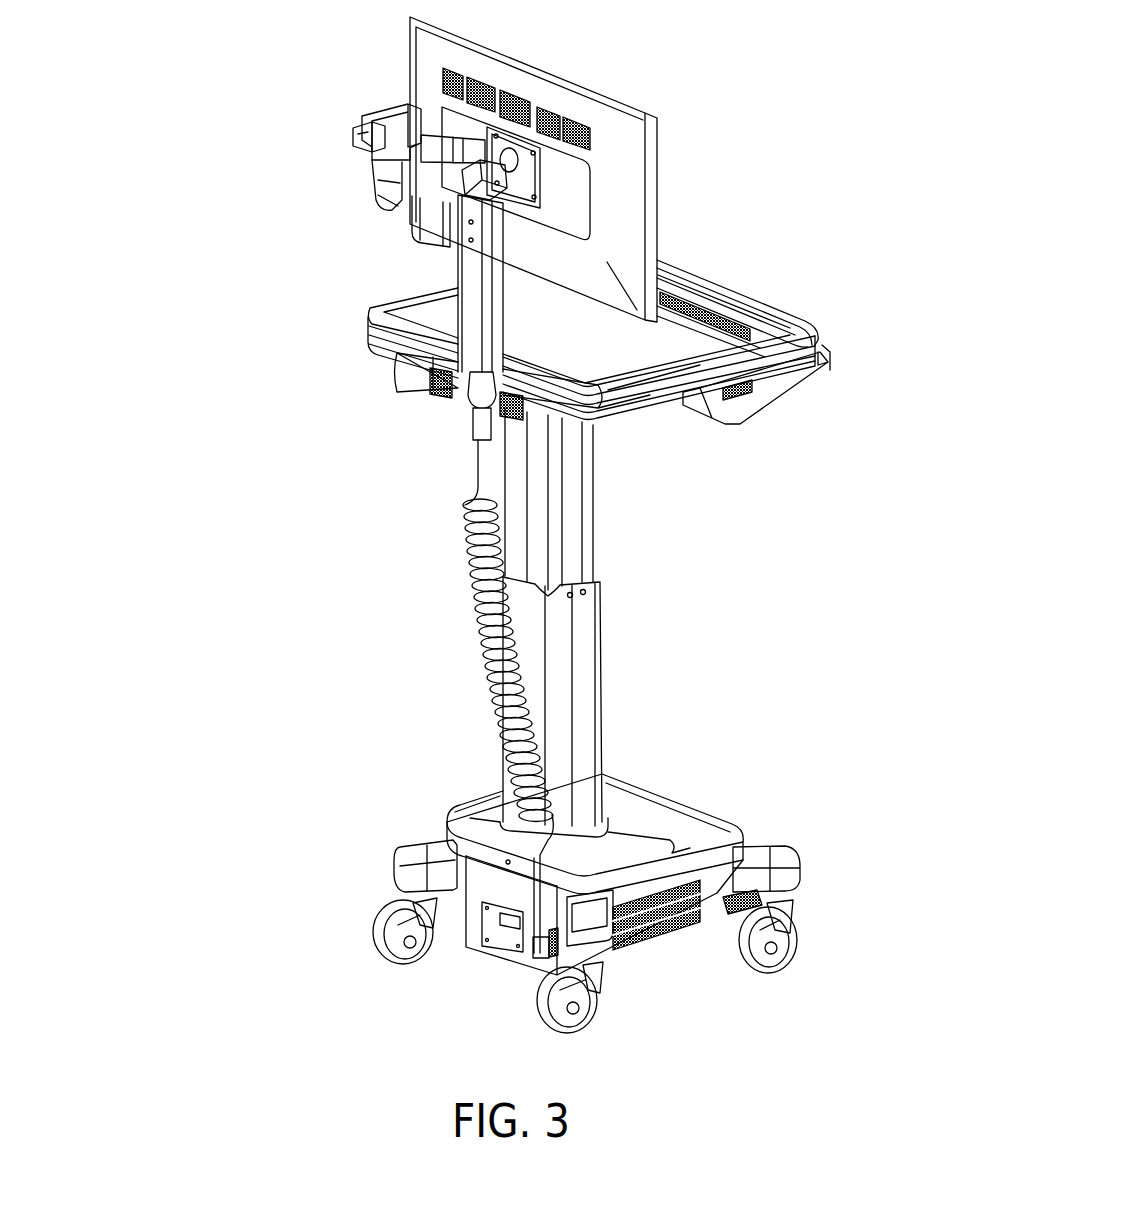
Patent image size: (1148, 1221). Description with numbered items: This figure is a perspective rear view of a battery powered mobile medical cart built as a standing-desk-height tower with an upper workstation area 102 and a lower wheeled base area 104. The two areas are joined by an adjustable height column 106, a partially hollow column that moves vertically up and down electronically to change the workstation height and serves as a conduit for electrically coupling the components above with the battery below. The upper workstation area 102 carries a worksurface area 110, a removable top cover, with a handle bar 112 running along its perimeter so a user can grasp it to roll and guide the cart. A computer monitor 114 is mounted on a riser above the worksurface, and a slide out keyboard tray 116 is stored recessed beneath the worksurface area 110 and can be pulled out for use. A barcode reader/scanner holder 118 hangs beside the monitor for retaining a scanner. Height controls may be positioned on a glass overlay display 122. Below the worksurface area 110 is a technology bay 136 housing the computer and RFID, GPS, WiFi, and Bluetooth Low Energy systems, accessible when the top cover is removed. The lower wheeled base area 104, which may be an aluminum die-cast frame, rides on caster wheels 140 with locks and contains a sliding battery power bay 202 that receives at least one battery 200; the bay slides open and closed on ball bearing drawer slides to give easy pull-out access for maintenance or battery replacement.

The upper workstation area 102 is at (227, 3).
The lower wheeled base area 104 is at (207, 818).
The adjustable height column 106 is at (587, 657).
The worksurface area 110 is at (633, 337).
The handle bar 112 is at (770, 308).
The computer monitor 114 is at (627, 100).
The slide out keyboard tray 116 is at (757, 393).
The barcode reader/scanner holder 118 is at (403, 125).
The glass overlay display 122 is at (683, 308).
The technology bay 136 is at (427, 380).
The wheels 140 is at (743, 933).
The battery 200 is at (503, 933).
The sliding battery power bay 202 is at (461, 942).